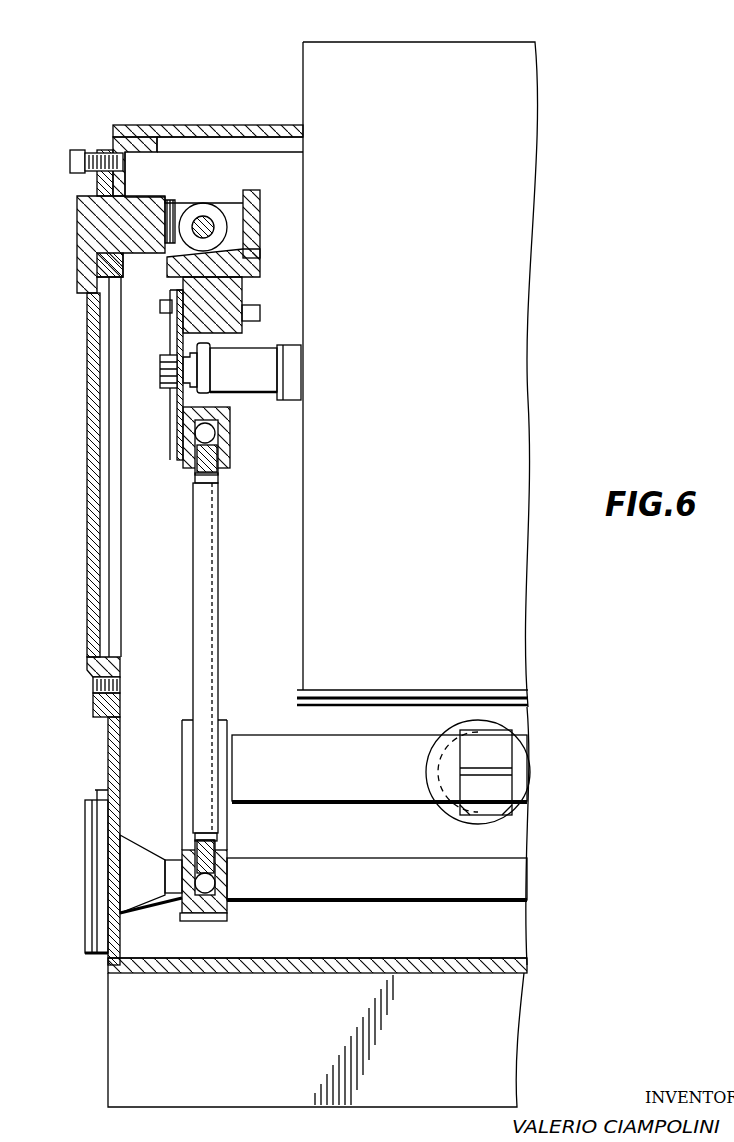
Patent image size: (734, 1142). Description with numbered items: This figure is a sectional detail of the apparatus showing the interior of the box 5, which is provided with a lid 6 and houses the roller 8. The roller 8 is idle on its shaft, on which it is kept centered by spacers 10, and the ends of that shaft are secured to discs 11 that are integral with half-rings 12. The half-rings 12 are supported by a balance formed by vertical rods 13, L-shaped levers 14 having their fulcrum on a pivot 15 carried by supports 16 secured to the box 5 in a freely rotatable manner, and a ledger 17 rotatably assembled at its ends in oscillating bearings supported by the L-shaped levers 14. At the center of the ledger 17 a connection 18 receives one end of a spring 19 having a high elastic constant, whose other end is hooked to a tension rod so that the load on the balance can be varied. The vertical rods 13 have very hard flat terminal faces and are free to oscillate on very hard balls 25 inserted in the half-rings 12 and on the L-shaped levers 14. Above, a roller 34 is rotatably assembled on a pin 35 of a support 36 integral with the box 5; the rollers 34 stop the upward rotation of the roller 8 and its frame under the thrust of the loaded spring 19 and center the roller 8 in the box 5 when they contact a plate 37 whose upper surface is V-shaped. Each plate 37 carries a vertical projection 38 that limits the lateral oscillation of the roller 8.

The box 5 is at (110, 729).
The lid 6 is at (220, 125).
The roller 8 is at (410, 45).
The spacers 10 is at (266, 355).
The discs 11 is at (178, 412).
The half-rings 12 is at (192, 322).
The vertical rods 13 is at (214, 550).
The L-shaped levers 14 is at (183, 824).
The pivot 15 is at (388, 900).
The supports 16 is at (160, 908).
The ledger 17 is at (322, 792).
The connection 18 is at (525, 820).
The spring 19 is at (458, 818).
The balls 25 is at (230, 444).
The rollers 34 is at (205, 203).
The pins 35 is at (203, 215).
The supports 36 is at (88, 240).
The plates 37 is at (166, 278).
The vertical projection 38 is at (258, 192).